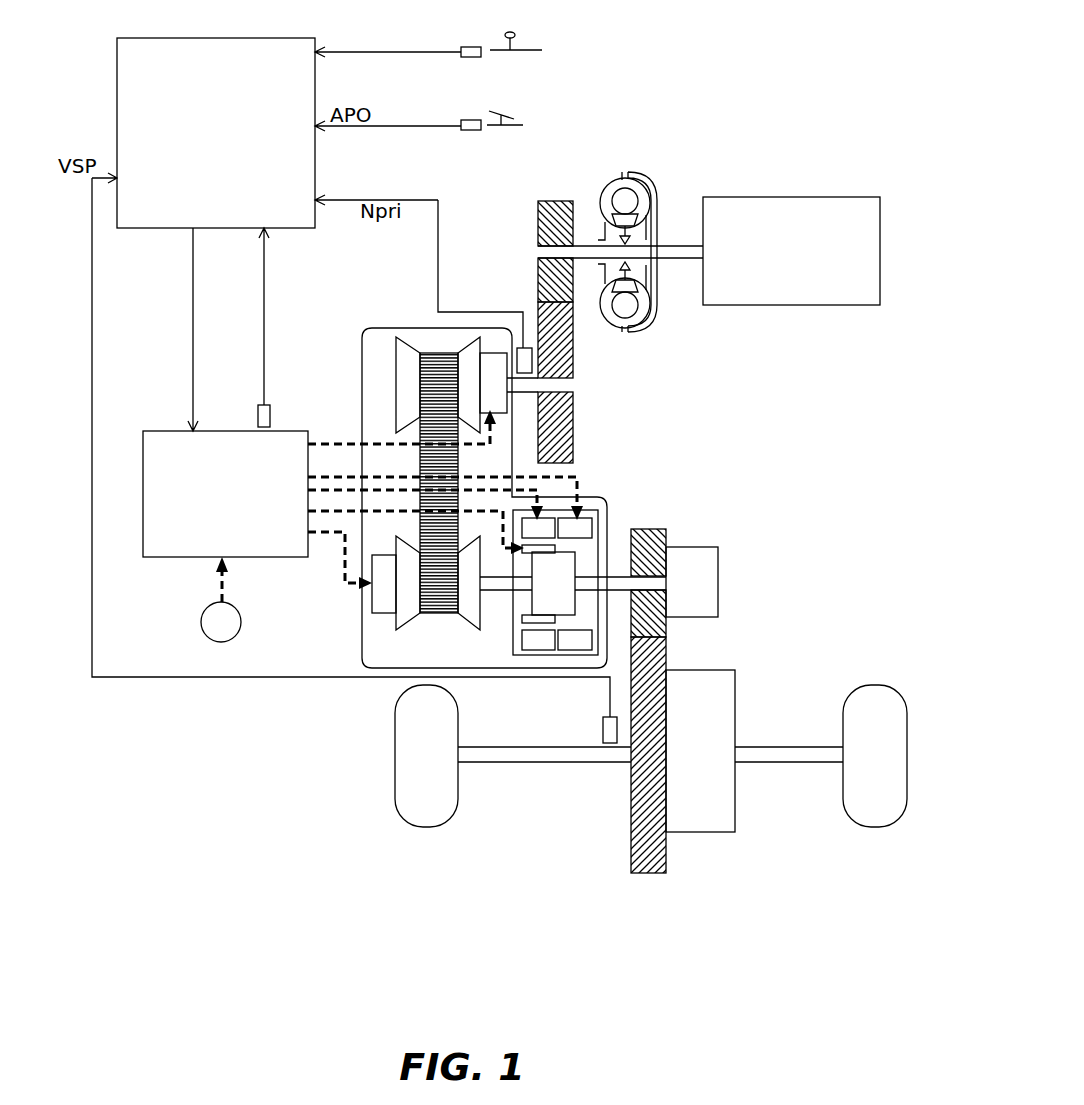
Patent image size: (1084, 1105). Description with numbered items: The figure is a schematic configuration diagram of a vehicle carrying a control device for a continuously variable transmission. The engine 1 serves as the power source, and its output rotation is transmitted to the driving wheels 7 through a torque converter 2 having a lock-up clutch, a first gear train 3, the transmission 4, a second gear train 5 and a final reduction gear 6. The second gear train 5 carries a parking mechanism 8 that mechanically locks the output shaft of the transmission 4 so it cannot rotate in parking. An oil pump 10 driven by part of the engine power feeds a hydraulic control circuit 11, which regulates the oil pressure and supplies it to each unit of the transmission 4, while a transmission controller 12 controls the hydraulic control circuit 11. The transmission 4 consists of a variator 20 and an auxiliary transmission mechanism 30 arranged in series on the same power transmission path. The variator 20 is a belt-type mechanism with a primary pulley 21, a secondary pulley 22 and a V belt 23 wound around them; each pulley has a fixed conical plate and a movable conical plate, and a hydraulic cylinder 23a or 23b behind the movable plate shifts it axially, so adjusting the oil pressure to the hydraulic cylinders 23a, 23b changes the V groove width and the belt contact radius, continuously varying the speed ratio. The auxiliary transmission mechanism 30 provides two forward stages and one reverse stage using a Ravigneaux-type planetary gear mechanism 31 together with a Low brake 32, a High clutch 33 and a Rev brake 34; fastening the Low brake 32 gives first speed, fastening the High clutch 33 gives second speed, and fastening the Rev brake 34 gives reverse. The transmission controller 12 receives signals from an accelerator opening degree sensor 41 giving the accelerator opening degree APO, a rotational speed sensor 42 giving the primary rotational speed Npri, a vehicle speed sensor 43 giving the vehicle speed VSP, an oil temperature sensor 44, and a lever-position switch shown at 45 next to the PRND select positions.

The engine 1 is at (865, 211).
The torque converter 2 is at (655, 206).
The first gear train 3 is at (562, 188).
The transmission 4 is at (414, 453).
The second gear train 5 is at (654, 889).
The final reduction gear 6 is at (700, 822).
The driving wheels 7 is at (428, 812).
The parking mechanism 8 is at (703, 574).
The oil pump 10 is at (202, 612).
The hydraulic control circuit 11 is at (168, 437).
The transmission controller 12 is at (301, 42).
The variator 20 is at (386, 350).
The primary pulley 21 is at (410, 386).
The secondary pulley 22 is at (408, 600).
The V belt 23 is at (440, 352).
The hydraulic cylinder 23a is at (490, 365).
The hydraulic cylinder 23b is at (378, 591).
The auxiliary transmission mechanism 30 is at (580, 542).
The Ravigneaux-type planetary gear mechanism 31 is at (557, 578).
The Low brake 32 is at (541, 529).
The High clutch 33 is at (537, 621).
The Rev brake 34 is at (576, 530).
The accelerator opening degree sensor 41 is at (481, 130).
The rotational speed sensor 42 is at (524, 360).
The vehicle speed sensor 43 is at (608, 731).
The oil temperature sensor 44 is at (271, 416).
The inhibitor switch 45 is at (470, 48).